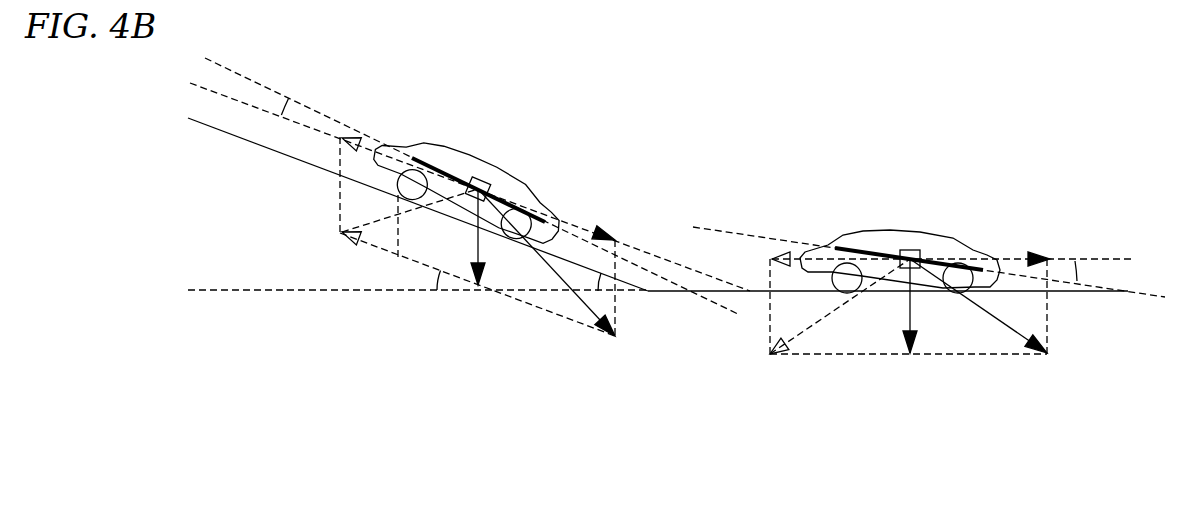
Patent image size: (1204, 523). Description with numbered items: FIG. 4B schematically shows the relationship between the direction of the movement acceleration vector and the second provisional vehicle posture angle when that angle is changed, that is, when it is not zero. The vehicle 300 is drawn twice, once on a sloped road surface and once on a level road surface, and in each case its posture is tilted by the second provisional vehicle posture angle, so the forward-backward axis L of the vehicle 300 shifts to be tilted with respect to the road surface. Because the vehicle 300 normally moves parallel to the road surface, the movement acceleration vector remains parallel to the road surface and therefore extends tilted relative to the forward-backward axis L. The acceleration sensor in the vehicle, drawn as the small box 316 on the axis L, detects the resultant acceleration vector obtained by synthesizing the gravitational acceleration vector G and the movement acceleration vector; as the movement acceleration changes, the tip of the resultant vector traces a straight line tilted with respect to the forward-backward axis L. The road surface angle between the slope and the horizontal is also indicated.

The vehicle 300 is at (520, 178).
The acceleration sensor 316 is at (472, 180).
The forward-backward axis L is at (493, 190).
The gravitational acceleration vector G is at (482, 257).